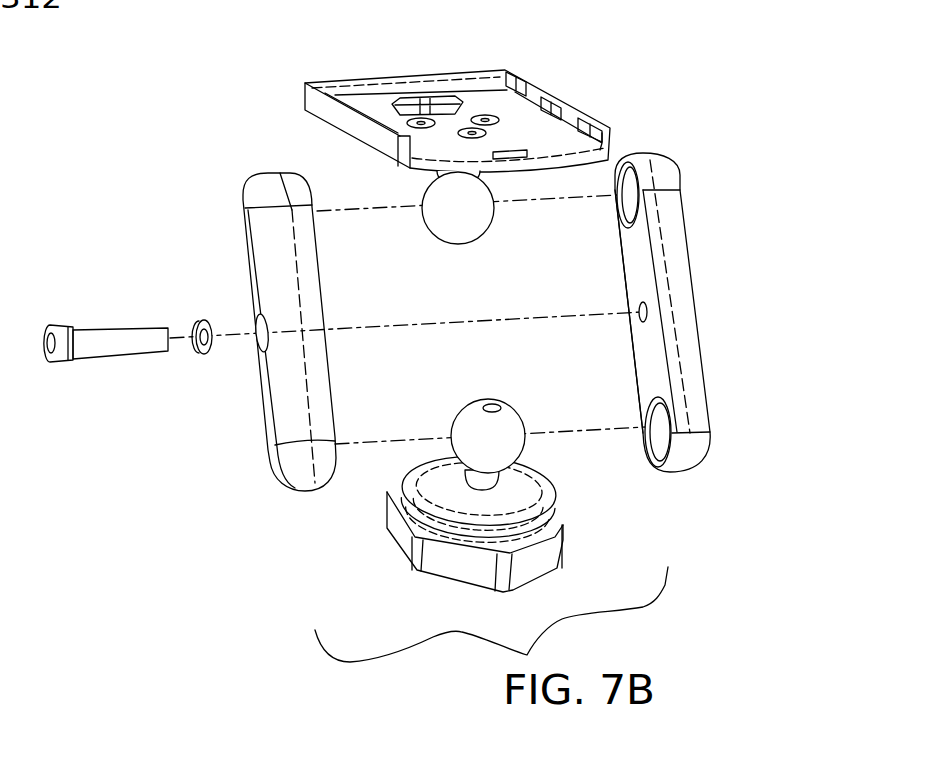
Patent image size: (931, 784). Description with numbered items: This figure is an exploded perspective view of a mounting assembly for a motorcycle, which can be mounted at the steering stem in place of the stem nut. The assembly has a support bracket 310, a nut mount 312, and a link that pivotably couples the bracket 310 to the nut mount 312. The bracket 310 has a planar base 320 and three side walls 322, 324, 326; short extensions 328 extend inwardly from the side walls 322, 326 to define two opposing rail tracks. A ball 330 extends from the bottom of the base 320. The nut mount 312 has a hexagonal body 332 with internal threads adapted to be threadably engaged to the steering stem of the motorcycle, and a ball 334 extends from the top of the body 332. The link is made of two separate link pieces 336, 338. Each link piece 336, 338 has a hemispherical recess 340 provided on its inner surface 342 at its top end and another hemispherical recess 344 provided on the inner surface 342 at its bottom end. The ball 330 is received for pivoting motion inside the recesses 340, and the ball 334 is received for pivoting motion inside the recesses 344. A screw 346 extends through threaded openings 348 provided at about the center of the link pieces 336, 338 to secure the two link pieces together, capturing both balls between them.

The support bracket 310 is at (443, 82).
The nut mount 312 is at (569, 538).
The planar base 320 is at (542, 140).
The side wall 322 is at (577, 108).
The side wall 324 is at (393, 68).
The side wall 326 is at (325, 108).
The short extensions 328 is at (517, 80).
The ball 330 is at (474, 220).
The hexagonal body 332 is at (397, 538).
The ball 334 is at (503, 427).
The link piece 336 is at (252, 260).
The link piece 338 is at (675, 248).
The hemispherical recess 340 is at (627, 182).
The inner surface 342 is at (648, 357).
The hemispherical recess 344 is at (660, 442).
The screw 346 is at (120, 342).
The threaded openings 348 is at (263, 333).